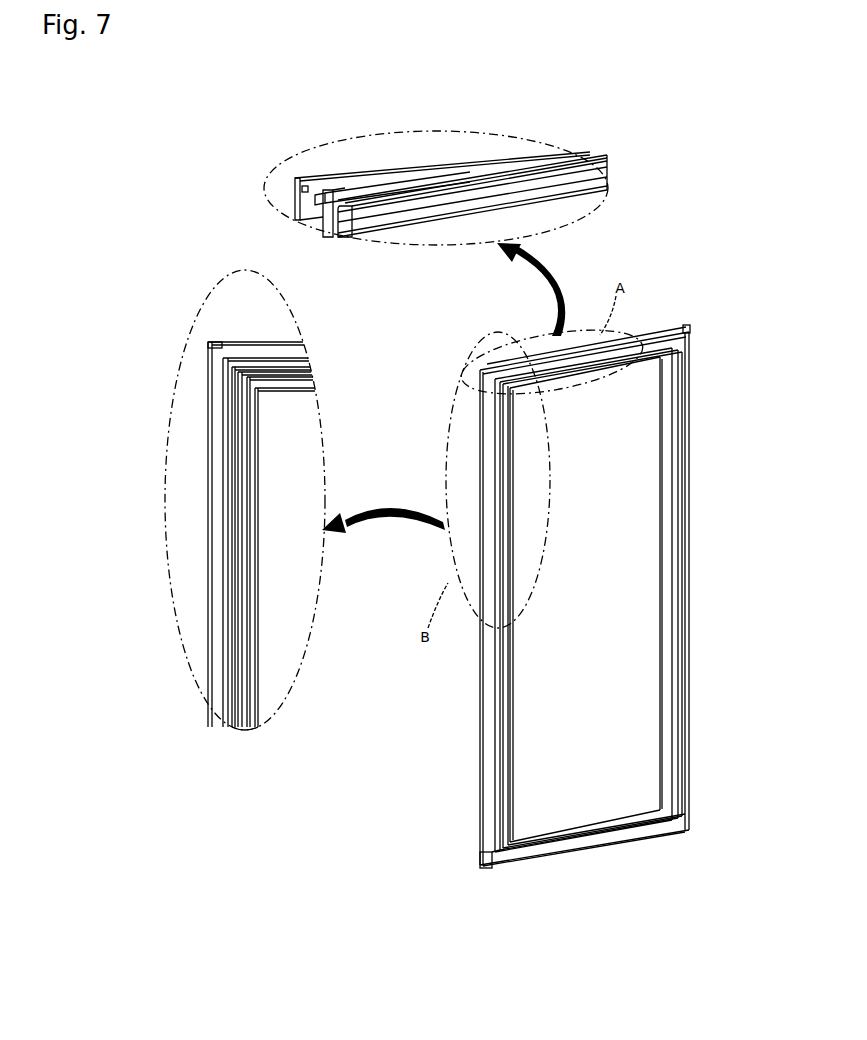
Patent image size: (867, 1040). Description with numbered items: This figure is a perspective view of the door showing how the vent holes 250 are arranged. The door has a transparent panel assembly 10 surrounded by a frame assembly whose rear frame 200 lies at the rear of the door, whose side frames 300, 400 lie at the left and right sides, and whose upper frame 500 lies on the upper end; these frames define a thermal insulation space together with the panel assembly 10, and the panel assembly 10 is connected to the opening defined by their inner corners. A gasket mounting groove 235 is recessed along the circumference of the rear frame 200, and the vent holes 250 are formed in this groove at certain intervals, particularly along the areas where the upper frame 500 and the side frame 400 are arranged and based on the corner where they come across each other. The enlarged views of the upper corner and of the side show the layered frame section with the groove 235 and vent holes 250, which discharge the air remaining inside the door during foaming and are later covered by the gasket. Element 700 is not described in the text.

The panel assembly 10 is at (635, 600).
The rear frame 200 is at (682, 450).
The gasket mounting groove 235 is at (233, 597).
The vent holes 250 is at (230, 482).
The side frame 300 is at (690, 325).
The side frame 400 is at (480, 833).
The upper frame 500 is at (462, 148).
The hinge frame 700 is at (355, 168).